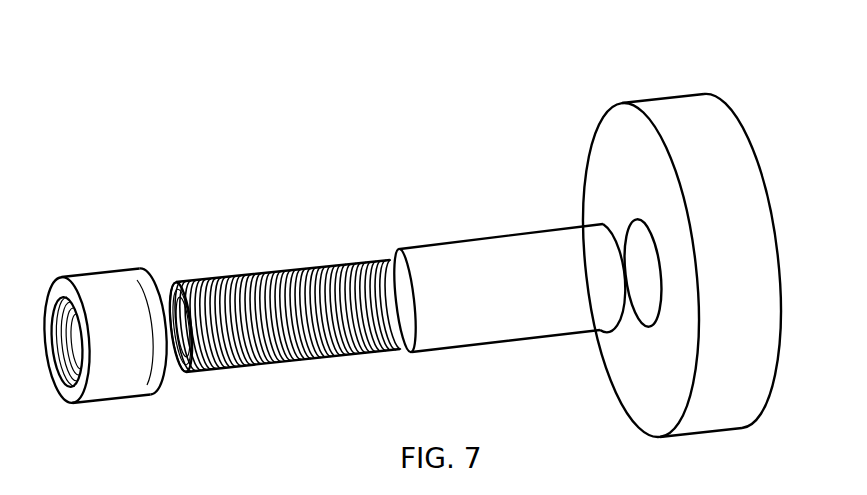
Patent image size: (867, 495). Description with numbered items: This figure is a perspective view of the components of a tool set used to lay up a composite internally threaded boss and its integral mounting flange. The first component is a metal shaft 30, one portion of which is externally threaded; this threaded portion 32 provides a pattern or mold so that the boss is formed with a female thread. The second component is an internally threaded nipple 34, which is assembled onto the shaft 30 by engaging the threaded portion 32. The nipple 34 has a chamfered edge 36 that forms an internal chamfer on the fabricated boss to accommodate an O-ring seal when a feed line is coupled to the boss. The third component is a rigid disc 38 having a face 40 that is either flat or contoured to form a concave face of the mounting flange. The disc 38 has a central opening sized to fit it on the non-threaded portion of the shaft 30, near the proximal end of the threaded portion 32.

The metal shaft 30 is at (395, 302).
The threaded portion 32 is at (312, 267).
The internally threaded nipple 34 is at (113, 280).
The chamfered edge 36 is at (160, 298).
The rigid disc 38 is at (622, 238).
The face 40 is at (613, 153).